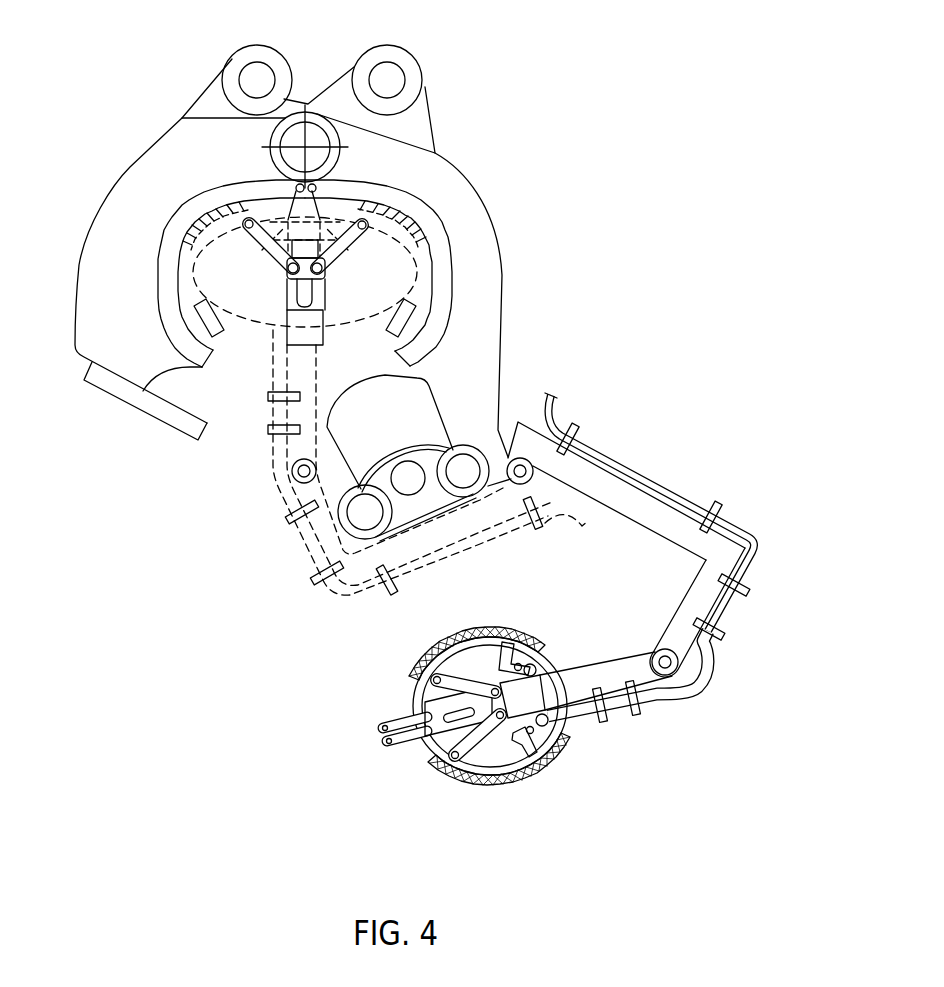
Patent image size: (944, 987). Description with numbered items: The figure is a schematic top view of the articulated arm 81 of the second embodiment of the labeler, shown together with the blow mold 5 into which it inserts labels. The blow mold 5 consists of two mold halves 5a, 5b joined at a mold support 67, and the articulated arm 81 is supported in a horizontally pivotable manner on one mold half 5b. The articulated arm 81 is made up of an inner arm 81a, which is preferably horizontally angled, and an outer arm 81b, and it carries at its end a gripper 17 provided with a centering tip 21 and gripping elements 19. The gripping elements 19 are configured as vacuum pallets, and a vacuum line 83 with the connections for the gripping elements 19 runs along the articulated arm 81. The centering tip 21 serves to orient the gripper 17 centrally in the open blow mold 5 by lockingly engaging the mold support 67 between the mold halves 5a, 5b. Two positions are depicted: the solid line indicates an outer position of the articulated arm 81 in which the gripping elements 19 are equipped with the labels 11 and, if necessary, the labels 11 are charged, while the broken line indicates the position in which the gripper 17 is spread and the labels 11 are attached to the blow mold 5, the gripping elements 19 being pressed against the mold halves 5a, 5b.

The blow mold 5 is at (509, 55).
The mold half 5a is at (210, 199).
The mold half 5b is at (427, 229).
The mold support 67 is at (317, 133).
The articulated arm 81 is at (770, 583).
The inner arm 81a is at (648, 504).
The outer arm 81b is at (605, 671).
The vacuum line 83 is at (619, 461).
The gripper 17 is at (392, 666).
The gripping elements 19 is at (430, 760).
The label 11 is at (484, 795).
The centering tip 21 is at (380, 757).